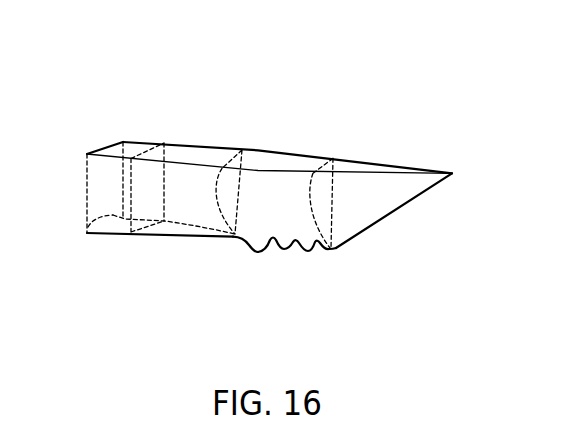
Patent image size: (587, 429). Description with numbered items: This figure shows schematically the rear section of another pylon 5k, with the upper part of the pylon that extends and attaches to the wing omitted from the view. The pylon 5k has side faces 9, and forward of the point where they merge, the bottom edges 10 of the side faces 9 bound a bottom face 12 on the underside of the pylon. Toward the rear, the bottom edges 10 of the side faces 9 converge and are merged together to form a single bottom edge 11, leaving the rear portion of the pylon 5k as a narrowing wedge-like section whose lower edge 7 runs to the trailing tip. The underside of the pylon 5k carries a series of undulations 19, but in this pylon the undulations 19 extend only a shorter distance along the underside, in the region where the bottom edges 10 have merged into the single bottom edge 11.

The pylon 5k is at (291, 124).
The side face 9 is at (370, 183).
The wedge-shaped tip portion 7 is at (428, 190).
The bottom edge 10 is at (168, 237).
The bottom face 12 is at (150, 237).
The undulations 19 is at (254, 248).
The single bottom edge 11 is at (288, 251).